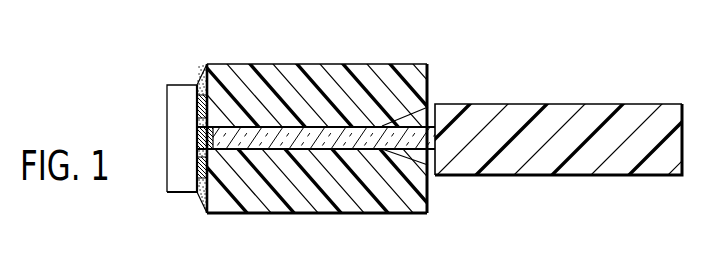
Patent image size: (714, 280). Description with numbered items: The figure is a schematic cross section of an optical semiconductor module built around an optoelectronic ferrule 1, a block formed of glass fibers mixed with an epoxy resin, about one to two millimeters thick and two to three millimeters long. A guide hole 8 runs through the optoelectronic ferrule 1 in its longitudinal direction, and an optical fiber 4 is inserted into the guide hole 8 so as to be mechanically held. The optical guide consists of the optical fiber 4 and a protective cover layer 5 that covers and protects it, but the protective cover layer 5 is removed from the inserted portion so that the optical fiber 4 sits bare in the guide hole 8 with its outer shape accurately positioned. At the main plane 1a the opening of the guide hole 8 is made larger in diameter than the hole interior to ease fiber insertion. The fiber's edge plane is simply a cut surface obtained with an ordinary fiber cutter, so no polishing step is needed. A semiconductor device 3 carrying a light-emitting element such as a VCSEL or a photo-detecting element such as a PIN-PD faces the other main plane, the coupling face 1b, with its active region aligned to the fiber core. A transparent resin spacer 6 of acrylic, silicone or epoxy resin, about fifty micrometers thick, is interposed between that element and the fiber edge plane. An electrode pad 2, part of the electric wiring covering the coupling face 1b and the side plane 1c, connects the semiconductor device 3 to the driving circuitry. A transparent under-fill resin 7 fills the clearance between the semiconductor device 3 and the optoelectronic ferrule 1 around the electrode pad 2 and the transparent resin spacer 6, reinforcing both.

The optoelectronic ferrule 1 is at (308, 68).
The main plane 1a is at (427, 200).
The coupling face 1b is at (199, 203).
The side plane 1c is at (361, 214).
The electrode pad 2 is at (208, 100).
The semiconductor device 3 is at (177, 112).
The optical fiber 4 is at (355, 133).
The protective cover layer 5 is at (577, 107).
The transparent resin spacer 6 is at (197, 141).
The transparent under-fill resin 7 is at (193, 194).
The guide hole 8 is at (420, 112).